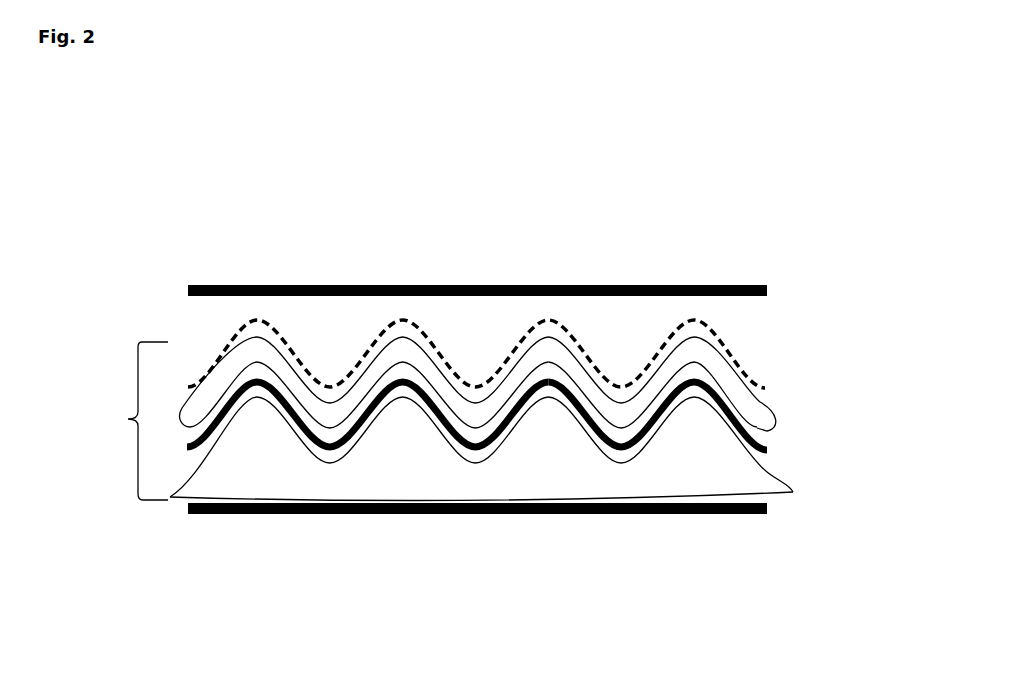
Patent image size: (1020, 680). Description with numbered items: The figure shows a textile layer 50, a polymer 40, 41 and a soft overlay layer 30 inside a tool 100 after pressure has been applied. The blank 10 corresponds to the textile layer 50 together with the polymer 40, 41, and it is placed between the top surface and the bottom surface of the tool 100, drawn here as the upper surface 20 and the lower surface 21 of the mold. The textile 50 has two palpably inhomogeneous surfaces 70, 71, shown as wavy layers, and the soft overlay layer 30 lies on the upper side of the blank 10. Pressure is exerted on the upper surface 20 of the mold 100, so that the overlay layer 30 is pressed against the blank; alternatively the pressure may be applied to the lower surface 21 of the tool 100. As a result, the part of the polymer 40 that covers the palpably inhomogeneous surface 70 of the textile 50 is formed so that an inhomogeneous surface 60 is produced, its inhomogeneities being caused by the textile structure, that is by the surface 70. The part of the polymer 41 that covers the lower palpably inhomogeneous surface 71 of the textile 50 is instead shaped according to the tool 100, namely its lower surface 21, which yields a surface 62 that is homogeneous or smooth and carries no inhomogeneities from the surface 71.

The tool 100 is at (577, 256).
The blank 10 is at (128, 419).
The upper surface 20 is at (712, 285).
The lower surface 21 is at (188, 515).
The soft overlay layer 30 is at (765, 388).
The polymer 40 is at (782, 418).
The polymer 41 is at (795, 492).
The textile layer 50 is at (767, 450).
The inhomogeneous surface 60 is at (258, 333).
The surface 62 is at (253, 503).
The palpably inhomogeneous surface 70 is at (313, 427).
The palpably inhomogeneous surface 71 is at (460, 447).